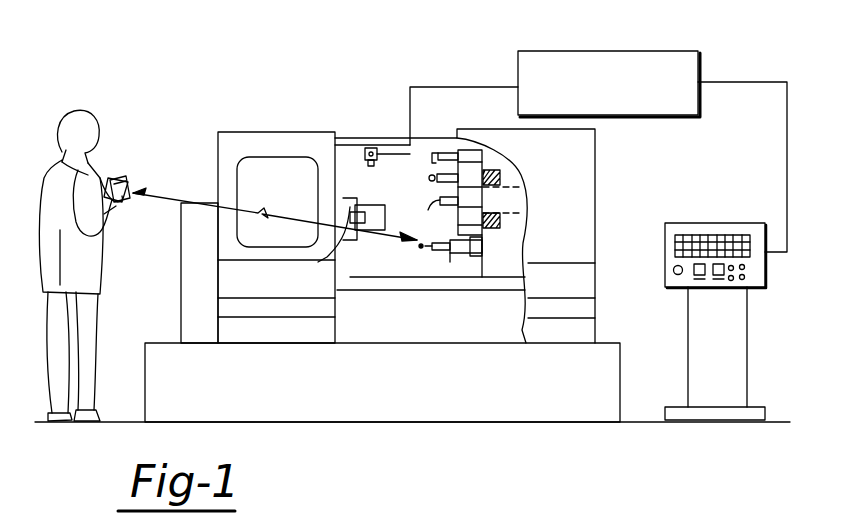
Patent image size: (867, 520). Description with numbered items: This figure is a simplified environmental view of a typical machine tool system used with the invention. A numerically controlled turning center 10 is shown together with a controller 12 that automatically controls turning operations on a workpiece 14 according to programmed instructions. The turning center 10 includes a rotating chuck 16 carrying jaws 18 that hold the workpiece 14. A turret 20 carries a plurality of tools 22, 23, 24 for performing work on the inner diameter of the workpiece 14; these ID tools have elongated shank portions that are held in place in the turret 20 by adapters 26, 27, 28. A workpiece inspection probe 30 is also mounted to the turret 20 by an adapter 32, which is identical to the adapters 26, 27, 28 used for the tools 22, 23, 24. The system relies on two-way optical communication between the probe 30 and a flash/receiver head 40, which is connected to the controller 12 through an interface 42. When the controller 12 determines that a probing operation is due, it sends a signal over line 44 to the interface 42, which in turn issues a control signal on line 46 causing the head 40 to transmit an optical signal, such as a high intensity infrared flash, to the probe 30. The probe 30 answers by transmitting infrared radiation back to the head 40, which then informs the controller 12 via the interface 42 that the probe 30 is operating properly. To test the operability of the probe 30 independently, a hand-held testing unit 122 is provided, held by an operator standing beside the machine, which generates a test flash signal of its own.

The numerically controlled turning center 10 is at (267, 92).
The controller 12 is at (680, 223).
The workpiece 14 is at (350, 207).
The rotating chuck 16 is at (318, 262).
The jaws 18 is at (352, 212).
The turret 20 is at (452, 257).
The tool 22 is at (456, 138).
The tool 23 is at (390, 143).
The tool 24 is at (487, 230).
The adapter 26 is at (467, 138).
The adapter 27 is at (487, 178).
The adapter 28 is at (473, 202).
The workpiece inspection probe 30 is at (447, 250).
The adapter 32 is at (473, 256).
The flash/receiver head 40 is at (362, 140).
The interface 42 is at (537, 60).
The line 44 is at (735, 82).
The line 46 is at (428, 87).
The hand-held testing unit 122 is at (125, 178).